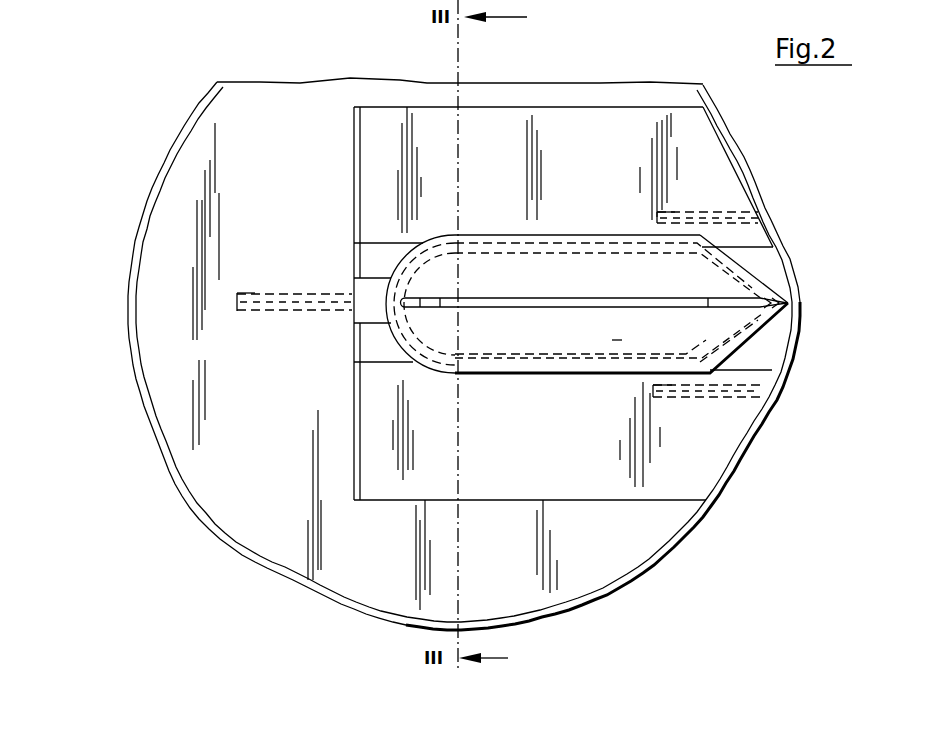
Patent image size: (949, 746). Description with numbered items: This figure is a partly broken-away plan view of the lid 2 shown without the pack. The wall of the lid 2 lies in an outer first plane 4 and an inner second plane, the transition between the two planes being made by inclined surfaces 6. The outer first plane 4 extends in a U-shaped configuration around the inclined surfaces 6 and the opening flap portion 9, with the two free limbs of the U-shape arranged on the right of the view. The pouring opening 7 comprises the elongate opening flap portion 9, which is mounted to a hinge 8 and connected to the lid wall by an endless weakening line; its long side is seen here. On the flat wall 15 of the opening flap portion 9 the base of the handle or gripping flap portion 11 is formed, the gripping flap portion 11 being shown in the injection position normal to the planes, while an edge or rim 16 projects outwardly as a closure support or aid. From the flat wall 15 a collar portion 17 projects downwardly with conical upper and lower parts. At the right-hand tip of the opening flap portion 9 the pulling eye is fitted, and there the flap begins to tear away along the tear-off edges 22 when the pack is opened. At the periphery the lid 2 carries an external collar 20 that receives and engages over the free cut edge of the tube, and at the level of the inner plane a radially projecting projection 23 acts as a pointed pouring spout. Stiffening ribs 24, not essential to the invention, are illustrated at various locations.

The lid 2 is at (178, 515).
The outer first plane 4 is at (262, 171).
The inclined surfaces 6 is at (604, 174).
The pouring opening 7 is at (645, 270).
The hinge 8 is at (372, 300).
The opening flap portion 9 is at (803, 364).
The gripping flap portion 11 is at (482, 318).
The flat wall 15 is at (617, 337).
The edge or rim 16 is at (654, 286).
The collar portion 17 is at (530, 358).
The collar 20 is at (623, 583).
The tear-off edges 22 is at (659, 307).
The radially projecting projection 23 is at (802, 307).
The stiffening ribs 24 is at (258, 312).